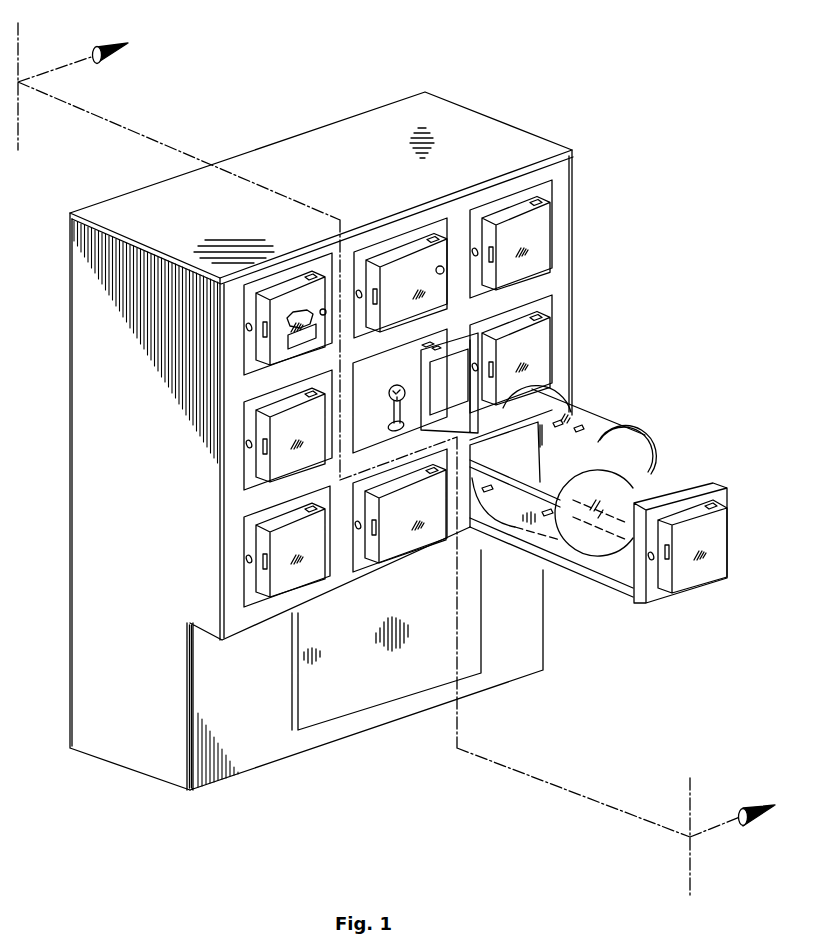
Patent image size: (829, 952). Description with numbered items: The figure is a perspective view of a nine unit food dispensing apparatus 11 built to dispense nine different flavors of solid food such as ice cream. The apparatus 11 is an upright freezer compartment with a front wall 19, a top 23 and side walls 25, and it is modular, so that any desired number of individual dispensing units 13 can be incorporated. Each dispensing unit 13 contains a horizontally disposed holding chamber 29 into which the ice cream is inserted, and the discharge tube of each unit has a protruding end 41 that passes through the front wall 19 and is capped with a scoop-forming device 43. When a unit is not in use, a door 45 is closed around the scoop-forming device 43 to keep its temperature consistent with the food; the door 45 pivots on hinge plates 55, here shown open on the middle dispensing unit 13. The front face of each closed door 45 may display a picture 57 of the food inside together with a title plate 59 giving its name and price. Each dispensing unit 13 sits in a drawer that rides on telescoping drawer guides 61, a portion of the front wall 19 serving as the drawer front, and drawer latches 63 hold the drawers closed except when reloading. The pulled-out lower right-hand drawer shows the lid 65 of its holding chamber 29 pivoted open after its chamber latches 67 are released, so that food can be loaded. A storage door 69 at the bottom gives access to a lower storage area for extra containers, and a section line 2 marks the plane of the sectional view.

The section line 2 is at (405, 459).
The food dispensing apparatus 11 is at (288, 400).
The dispensing unit 13 is at (476, 197).
The front wall 19 is at (356, 581).
The top 23 is at (480, 128).
The side wall 25 is at (92, 690).
The holding chamber 29 is at (547, 532).
The protruding end of discharge tube 41 is at (400, 387).
The scoop-forming device 43 is at (406, 424).
The door 45 is at (540, 241).
The hinge plate 55 is at (322, 310).
The picture 57 is at (306, 322).
The title plate 59 is at (288, 350).
The drawer guide 61 is at (483, 483).
The drawer latch 63 is at (248, 330).
The lid 65 is at (633, 451).
The chamber latch 67 is at (578, 427).
The storage door 69 is at (353, 697).